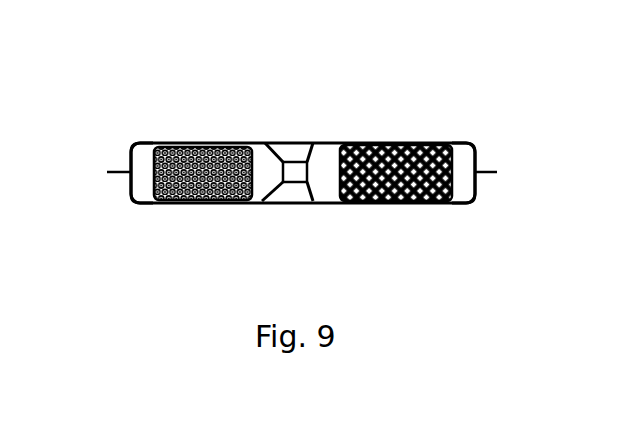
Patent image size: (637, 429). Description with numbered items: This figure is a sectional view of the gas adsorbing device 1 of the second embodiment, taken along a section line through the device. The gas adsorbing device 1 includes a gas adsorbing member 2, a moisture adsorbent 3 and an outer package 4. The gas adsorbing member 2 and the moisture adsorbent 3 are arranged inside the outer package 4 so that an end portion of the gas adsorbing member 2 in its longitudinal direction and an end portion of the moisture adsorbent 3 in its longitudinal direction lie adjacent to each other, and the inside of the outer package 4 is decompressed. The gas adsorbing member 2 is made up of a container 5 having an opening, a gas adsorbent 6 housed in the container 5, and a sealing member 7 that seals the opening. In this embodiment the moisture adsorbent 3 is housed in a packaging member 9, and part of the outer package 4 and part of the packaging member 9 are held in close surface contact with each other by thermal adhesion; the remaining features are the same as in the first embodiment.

The gas adsorbing device 1 is at (186, 136).
The gas adsorbing member 2 is at (143, 159).
The moisture adsorbent 3 is at (408, 162).
The outer package 4 is at (276, 150).
The container 5 is at (284, 183).
The gas adsorbent 6 is at (206, 201).
The sealing member 7 is at (291, 162).
The packaging member 9 is at (450, 146).